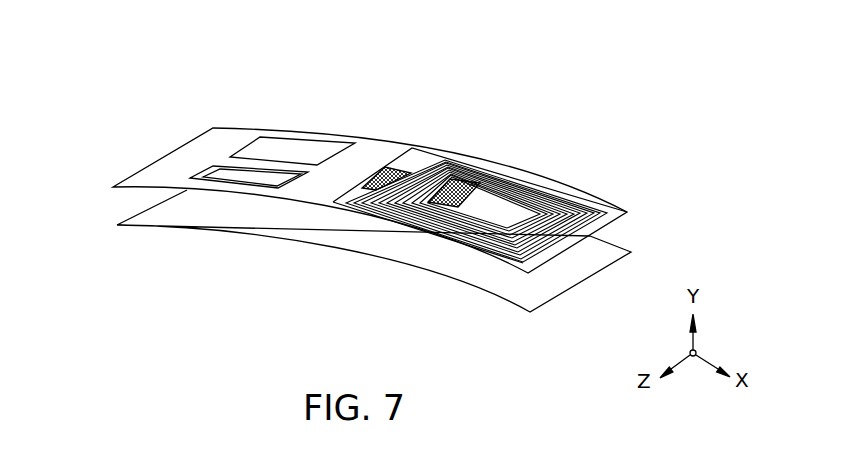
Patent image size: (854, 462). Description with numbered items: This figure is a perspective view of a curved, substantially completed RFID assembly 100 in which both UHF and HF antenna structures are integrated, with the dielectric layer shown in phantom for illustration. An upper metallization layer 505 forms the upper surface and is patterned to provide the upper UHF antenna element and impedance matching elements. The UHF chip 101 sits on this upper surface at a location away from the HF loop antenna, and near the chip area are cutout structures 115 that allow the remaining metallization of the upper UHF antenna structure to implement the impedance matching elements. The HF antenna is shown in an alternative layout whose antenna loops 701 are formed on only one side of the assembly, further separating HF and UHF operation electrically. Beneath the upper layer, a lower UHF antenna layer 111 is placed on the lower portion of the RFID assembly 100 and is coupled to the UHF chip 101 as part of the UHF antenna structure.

The RFID assembly 100 is at (185, 68).
The UHF chip 101 is at (273, 158).
The cutout structures 115 is at (316, 156).
The upper metallization layer 505 is at (405, 140).
The antenna loops 701 is at (588, 210).
The lower UHF antenna layer 111 is at (455, 280).